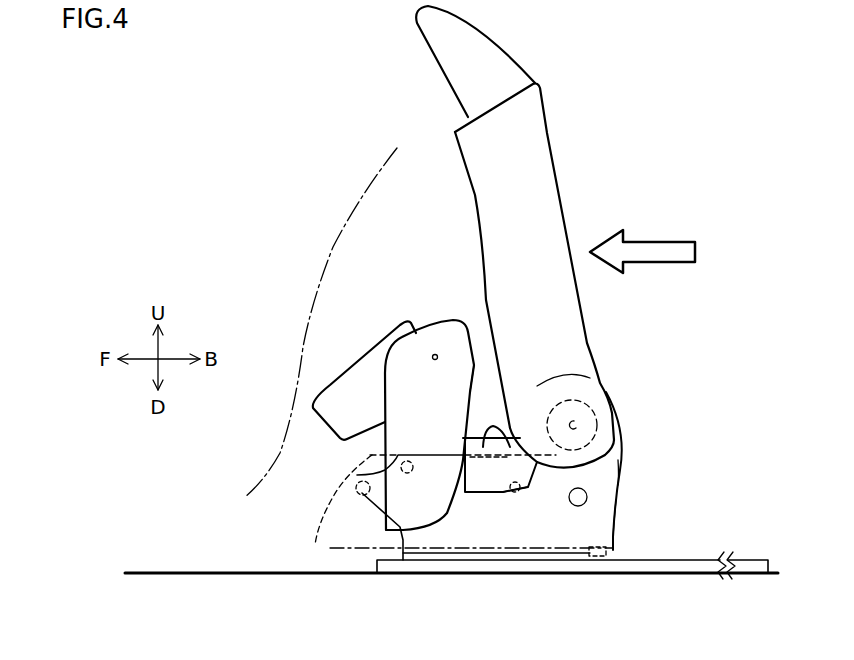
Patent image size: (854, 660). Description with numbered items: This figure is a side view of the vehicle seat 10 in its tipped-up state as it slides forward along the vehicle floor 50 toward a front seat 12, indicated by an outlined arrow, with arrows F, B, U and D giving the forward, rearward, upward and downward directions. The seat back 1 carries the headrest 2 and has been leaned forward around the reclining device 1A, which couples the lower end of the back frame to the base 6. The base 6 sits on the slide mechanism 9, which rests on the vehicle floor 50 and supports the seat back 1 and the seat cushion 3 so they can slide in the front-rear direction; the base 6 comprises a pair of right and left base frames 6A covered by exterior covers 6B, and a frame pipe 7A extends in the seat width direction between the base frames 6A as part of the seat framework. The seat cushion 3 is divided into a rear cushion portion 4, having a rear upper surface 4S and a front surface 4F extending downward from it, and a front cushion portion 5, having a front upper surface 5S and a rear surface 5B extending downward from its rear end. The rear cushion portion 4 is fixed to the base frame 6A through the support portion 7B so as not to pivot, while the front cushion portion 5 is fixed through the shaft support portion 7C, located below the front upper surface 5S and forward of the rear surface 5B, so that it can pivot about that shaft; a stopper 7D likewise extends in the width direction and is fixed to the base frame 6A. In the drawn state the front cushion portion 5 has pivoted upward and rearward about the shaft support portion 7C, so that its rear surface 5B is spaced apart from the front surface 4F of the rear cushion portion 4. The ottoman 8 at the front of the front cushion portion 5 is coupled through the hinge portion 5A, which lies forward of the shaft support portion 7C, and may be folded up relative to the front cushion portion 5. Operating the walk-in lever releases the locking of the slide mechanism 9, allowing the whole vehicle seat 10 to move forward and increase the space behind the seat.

The seat back 1 is at (523, 135).
The reclining device 1A is at (614, 445).
The headrest 2 is at (480, 53).
The seat cushion 3 is at (710, 342).
The rear cushion portion 4 is at (507, 435).
The front surface 4F is at (473, 455).
The rear upper surface 4S is at (495, 432).
The front cushion portion 5 is at (474, 408).
The hinge portion 5A is at (435, 354).
The front upper surface 5S is at (482, 365).
The rear surface 5B is at (428, 532).
The base 6 is at (724, 475).
The base frame 6A is at (606, 503).
The exterior cover 6B is at (620, 482).
The frame pipe 7A is at (580, 506).
The support portion 7B is at (527, 483).
The shaft support portion 7C is at (407, 473).
The stopper 7D is at (363, 495).
The ottoman 8 is at (365, 387).
The slide mechanism 9 is at (660, 565).
The vehicle seat 10 is at (447, 218).
The front seat 12 is at (343, 245).
The vehicle floor 50 is at (143, 573).